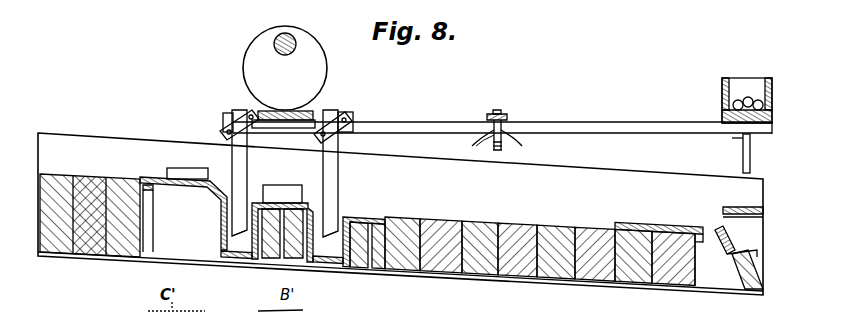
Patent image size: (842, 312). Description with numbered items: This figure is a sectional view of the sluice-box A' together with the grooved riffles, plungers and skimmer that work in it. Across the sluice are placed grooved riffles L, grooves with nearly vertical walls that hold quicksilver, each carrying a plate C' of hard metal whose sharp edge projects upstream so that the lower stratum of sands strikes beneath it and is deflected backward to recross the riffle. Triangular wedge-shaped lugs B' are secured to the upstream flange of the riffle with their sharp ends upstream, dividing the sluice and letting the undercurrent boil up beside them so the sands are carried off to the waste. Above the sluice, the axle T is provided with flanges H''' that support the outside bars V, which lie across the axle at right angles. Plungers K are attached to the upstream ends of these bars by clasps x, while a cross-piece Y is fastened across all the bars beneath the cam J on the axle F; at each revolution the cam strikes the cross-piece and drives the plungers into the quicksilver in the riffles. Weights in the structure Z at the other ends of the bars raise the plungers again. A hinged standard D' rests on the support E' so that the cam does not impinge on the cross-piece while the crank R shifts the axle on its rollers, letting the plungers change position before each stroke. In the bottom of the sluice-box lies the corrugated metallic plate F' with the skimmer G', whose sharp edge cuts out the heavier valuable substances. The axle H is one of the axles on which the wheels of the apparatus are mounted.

The sluice-box A' is at (400, 214).
The triangular wedge-shaped lugs B' is at (234, 175).
The plate C' is at (262, 218).
The outside bars V is at (497, 118).
The plungers K is at (285, 173).
The grooved riffles L is at (285, 240).
The clasps x is at (232, 113).
The cross-piece Y is at (322, 96).
The cam J is at (285, 68).
The axle F is at (275, 32).
The flanges H''' is at (505, 131).
The crank R is at (476, 143).
The axle T is at (489, 154).
The structure for holding stones or weights Z is at (747, 100).
The standard D' is at (753, 153).
The support E' is at (743, 203).
The corrugated metallic plate F' is at (659, 246).
The skimmer G' is at (731, 237).
The axle H is at (734, 263).